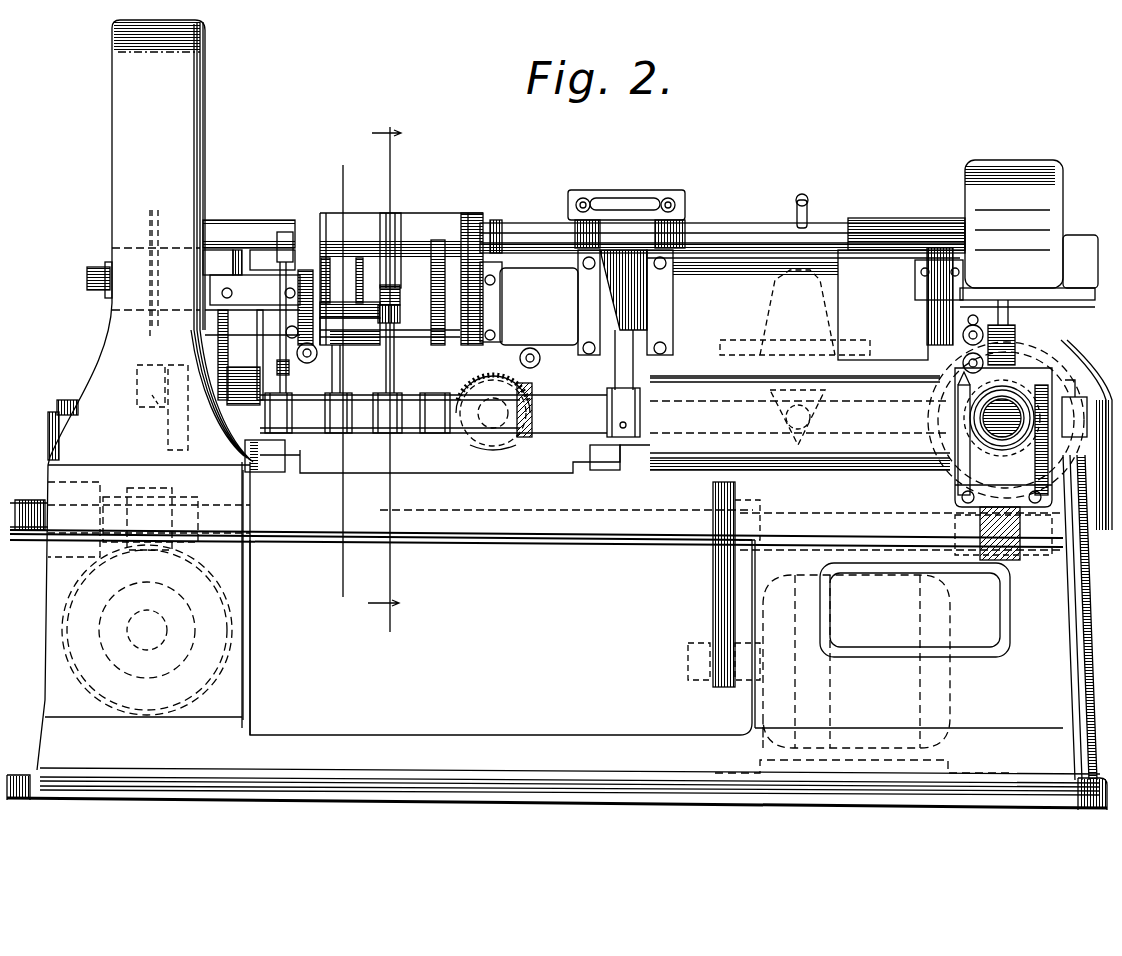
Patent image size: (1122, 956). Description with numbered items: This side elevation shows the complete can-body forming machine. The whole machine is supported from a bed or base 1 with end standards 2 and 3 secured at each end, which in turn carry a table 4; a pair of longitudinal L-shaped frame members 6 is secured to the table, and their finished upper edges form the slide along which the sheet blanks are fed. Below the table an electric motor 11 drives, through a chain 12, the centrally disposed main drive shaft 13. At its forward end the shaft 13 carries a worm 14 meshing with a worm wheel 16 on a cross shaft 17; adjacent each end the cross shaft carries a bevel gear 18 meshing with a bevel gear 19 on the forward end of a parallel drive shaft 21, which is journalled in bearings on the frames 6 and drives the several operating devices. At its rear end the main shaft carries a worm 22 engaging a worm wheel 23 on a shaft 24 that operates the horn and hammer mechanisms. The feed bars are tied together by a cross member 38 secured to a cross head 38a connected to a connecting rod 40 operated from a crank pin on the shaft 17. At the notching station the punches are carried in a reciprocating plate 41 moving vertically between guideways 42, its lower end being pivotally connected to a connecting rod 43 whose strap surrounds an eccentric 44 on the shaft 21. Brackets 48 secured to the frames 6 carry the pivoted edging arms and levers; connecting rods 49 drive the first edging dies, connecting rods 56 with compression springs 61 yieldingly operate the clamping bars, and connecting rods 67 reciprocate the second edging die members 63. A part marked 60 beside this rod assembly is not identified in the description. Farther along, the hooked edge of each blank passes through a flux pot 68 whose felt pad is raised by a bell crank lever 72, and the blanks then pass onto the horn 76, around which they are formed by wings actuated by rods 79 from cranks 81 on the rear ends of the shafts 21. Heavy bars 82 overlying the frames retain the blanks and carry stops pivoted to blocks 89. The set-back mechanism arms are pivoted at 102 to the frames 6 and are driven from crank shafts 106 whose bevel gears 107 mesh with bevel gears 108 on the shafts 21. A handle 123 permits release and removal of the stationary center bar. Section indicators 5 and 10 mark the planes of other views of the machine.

The bed or base 1 is at (532, 733).
The end standard 2 is at (233, 670).
The end standard 3 is at (1050, 720).
The table 4 is at (563, 518).
The section line 5 is at (356, 166).
The L-shaped frame members 6 is at (448, 462).
The headstock frame 10 is at (250, 235).
The electric motor 11 is at (935, 690).
The chain 12 is at (713, 602).
The main drive shaft 13 is at (623, 540).
The worm 14 is at (1018, 575).
The worm wheel 16 is at (1065, 462).
The cross shaft 17 is at (992, 450).
The bevel gear 18 is at (1018, 380).
The bevel gear 19 is at (985, 470).
The parallel drive shafts 21 is at (590, 397).
The worm 22 is at (167, 490).
The worm wheel 23 is at (227, 610).
The shaft 24 is at (160, 622).
The cross member 38 is at (825, 292).
The cross head 38a is at (862, 363).
The connecting rod 40 is at (857, 418).
The reciprocating plate 41 is at (626, 219).
The guideways 42 is at (658, 300).
The connecting rod 43 is at (615, 383).
The eccentric 44 is at (640, 415).
The brackets 48 is at (295, 318).
The connecting rods 49 is at (434, 333).
The connecting rods 56 is at (393, 363).
The slide 60 is at (350, 301).
The compression springs 61 is at (400, 296).
The die members 63 is at (358, 247).
The connecting rods 67 is at (342, 381).
The flux pot 68 is at (257, 262).
The bell crank lever 72 is at (286, 362).
The horn 76 is at (102, 300).
The rods 79 is at (150, 340).
The cranks 81 is at (161, 407).
The bars 82 is at (755, 237).
The blocks 89 is at (498, 228).
The pivot 102 is at (312, 355).
The crank shafts 106 is at (518, 450).
The bevel gears 107 is at (488, 378).
The bevel gears 108 is at (532, 409).
The handle 123 is at (827, 195).